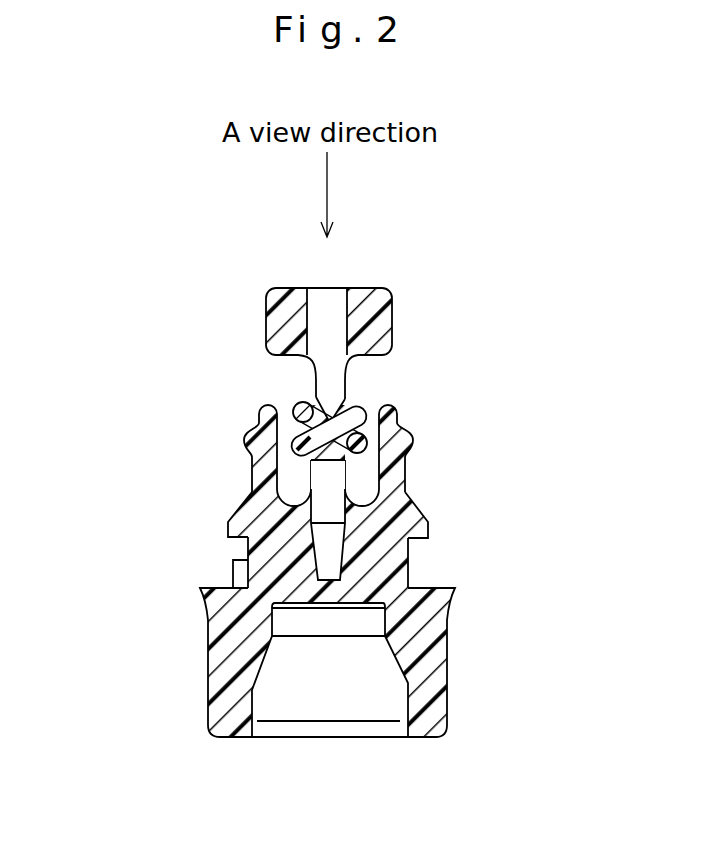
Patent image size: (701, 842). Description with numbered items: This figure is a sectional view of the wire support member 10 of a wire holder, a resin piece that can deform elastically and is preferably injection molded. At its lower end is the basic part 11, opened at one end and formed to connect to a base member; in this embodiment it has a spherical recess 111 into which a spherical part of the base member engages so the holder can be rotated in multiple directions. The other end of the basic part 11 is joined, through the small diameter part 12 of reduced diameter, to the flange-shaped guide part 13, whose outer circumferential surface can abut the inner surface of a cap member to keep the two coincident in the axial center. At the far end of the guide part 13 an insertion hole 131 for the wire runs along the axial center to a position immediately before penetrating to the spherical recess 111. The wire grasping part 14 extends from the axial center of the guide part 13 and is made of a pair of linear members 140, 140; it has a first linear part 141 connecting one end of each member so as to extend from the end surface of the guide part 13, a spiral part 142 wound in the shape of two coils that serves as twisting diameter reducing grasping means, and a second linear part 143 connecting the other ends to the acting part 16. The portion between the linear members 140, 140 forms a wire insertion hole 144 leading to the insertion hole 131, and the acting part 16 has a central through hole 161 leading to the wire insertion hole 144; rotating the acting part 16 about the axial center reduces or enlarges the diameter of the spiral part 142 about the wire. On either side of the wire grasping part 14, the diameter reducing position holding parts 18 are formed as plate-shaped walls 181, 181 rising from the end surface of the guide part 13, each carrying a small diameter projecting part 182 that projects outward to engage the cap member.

The wire support member 10 is at (481, 322).
The basic part 11 is at (437, 664).
The spherical recess 111 is at (407, 690).
The small diameter part 12 is at (392, 557).
The guide part 13 is at (425, 528).
The insertion hole 131 is at (328, 512).
The wire grasping part 14 is at (538, 330).
The linear member 140 is at (297, 408).
The first linear part 141 is at (358, 467).
The spiral part 142 is at (379, 399).
The second linear part 143 is at (370, 374).
The wire insertion hole 144 is at (335, 422).
The acting part 16 is at (270, 293).
The through hole 161 is at (331, 297).
The diameter reducing position holding part 18 is at (92, 378).
The wall 181 is at (253, 459).
The small diameter projecting part 182 is at (247, 438).